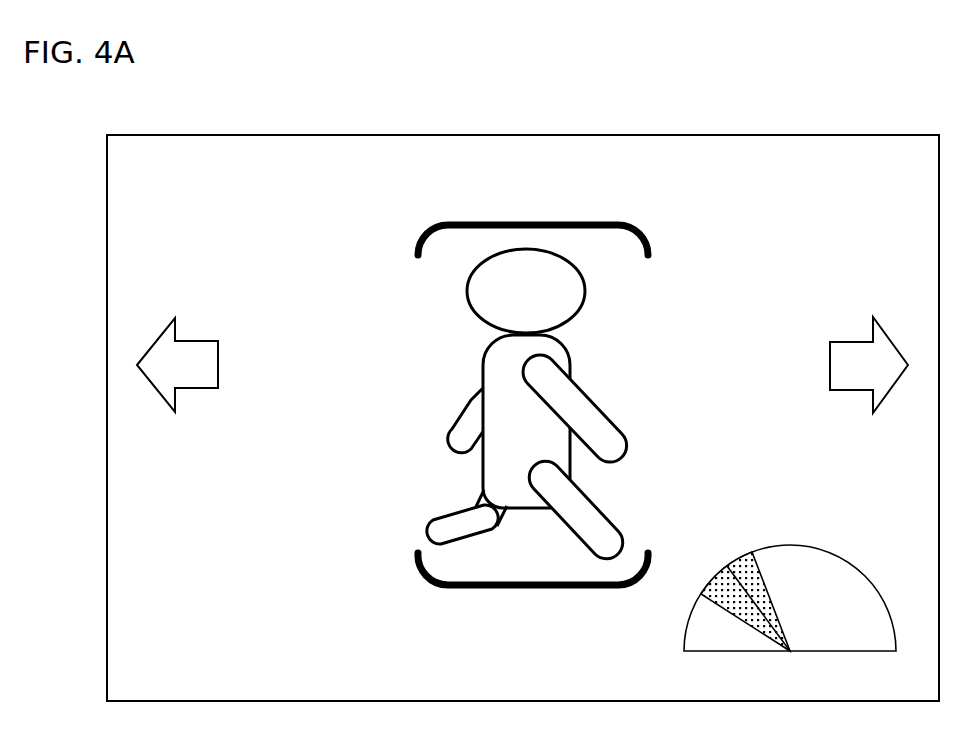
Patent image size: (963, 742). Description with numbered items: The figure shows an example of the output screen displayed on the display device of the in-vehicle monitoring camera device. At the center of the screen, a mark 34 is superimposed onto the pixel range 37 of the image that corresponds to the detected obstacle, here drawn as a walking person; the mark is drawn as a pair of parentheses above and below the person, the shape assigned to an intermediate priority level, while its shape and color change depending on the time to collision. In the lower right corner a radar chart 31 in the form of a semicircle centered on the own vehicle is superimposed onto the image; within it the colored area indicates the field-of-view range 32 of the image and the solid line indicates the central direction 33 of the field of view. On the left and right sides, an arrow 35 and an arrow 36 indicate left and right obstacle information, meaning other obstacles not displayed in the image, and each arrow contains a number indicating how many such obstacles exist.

The radar chart 31 is at (857, 567).
The field-of-view range 32 is at (733, 558).
The central direction 33 is at (745, 598).
The mark 34 is at (541, 218).
The arrow 35 is at (197, 341).
The arrow 36 is at (852, 342).
The pixel range 37 is at (452, 375).